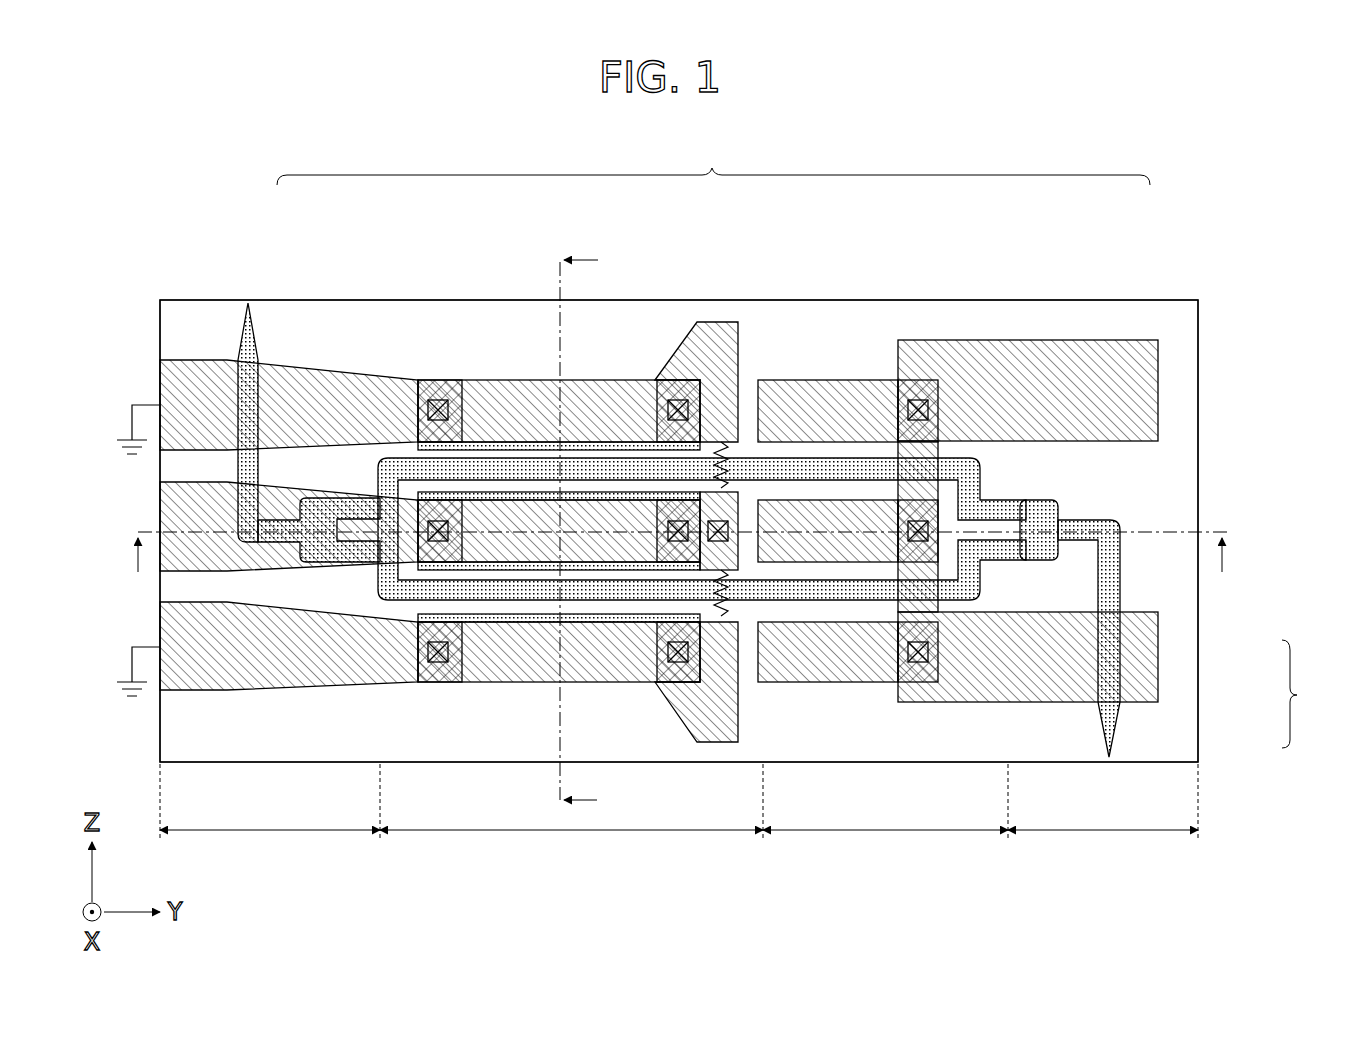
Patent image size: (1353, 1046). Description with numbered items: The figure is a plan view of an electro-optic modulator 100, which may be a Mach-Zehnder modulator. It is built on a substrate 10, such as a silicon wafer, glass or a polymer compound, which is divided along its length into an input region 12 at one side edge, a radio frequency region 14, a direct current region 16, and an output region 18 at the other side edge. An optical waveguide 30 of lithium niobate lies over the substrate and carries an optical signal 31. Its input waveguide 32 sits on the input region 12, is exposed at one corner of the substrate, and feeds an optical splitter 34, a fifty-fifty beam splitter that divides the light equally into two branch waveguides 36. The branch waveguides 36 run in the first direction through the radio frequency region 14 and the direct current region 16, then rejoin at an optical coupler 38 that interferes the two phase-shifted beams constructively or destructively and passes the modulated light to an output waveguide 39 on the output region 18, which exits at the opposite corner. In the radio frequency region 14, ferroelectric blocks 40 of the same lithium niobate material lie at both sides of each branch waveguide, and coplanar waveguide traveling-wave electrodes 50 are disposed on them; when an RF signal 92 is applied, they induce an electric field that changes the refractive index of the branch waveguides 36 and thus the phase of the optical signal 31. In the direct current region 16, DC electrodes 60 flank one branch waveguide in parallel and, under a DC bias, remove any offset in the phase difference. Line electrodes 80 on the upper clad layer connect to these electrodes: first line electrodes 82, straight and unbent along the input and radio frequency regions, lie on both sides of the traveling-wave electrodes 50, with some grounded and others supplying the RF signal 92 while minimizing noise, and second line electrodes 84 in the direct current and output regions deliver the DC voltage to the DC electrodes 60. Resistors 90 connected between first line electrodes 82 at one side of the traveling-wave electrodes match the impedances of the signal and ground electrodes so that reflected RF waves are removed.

The substrate 10 is at (1200, 431).
The input region 12 is at (270, 814).
The radio frequency region 14 is at (571, 814).
The direct current (DC) region 16 is at (885, 814).
The output region 18 is at (1103, 814).
The optical waveguide 30 is at (713, 161).
The optical signal 31 is at (248, 252).
The input waveguide 32 is at (256, 345).
The optical splitter 34 is at (318, 500).
The branch waveguides 36 is at (488, 468).
The optical coupler 38 is at (1030, 512).
The output waveguide 39 is at (1120, 590).
The ferroelectric blocks 40 is at (510, 612).
The coplanar waveguide (CPW) traveling-wave electrodes 50 is at (633, 668).
The direct current (DC) electrodes 60 is at (822, 550).
The line electrodes 80 is at (1304, 694).
The first line electrodes 82 is at (728, 727).
The second line electrodes 84 is at (1142, 653).
The resistors 90 is at (737, 604).
The RF signal 92 is at (150, 517).
The electro-optic modulator 100 is at (1204, 267).